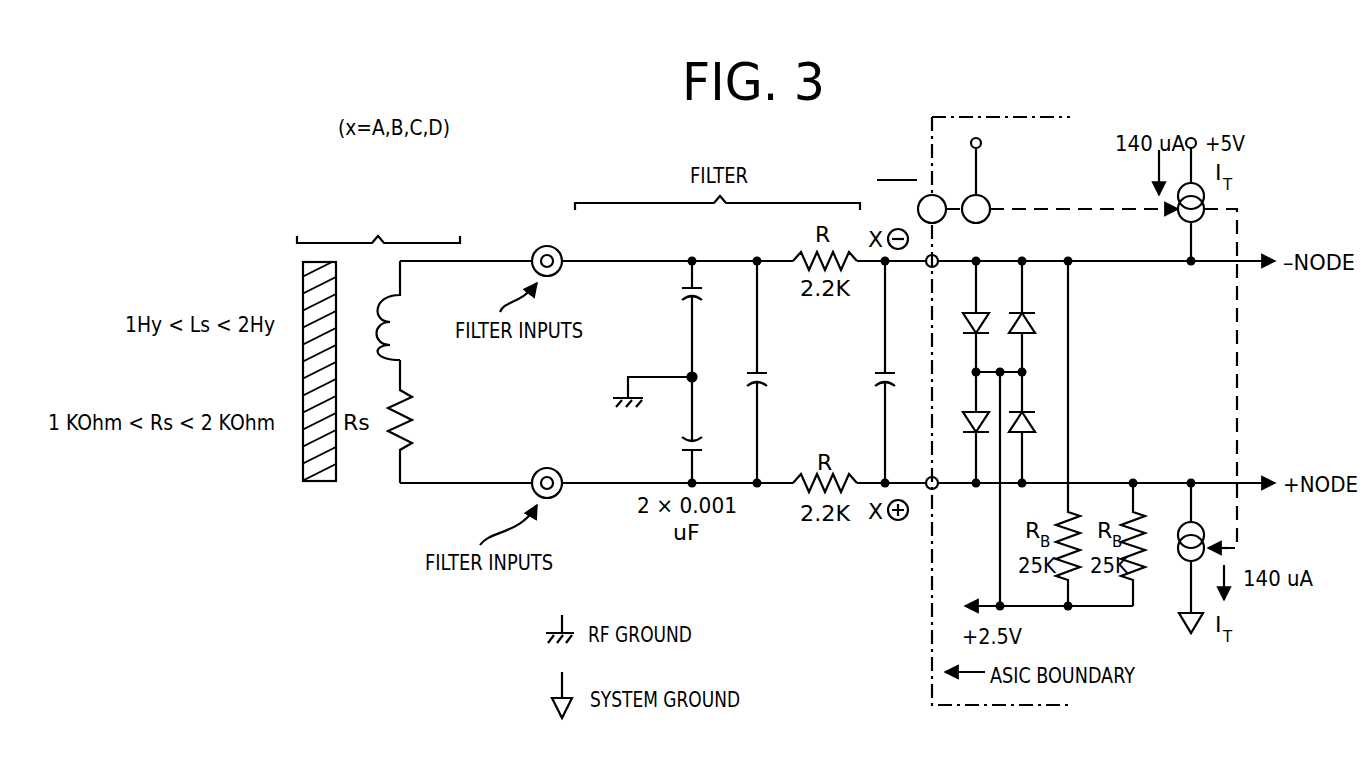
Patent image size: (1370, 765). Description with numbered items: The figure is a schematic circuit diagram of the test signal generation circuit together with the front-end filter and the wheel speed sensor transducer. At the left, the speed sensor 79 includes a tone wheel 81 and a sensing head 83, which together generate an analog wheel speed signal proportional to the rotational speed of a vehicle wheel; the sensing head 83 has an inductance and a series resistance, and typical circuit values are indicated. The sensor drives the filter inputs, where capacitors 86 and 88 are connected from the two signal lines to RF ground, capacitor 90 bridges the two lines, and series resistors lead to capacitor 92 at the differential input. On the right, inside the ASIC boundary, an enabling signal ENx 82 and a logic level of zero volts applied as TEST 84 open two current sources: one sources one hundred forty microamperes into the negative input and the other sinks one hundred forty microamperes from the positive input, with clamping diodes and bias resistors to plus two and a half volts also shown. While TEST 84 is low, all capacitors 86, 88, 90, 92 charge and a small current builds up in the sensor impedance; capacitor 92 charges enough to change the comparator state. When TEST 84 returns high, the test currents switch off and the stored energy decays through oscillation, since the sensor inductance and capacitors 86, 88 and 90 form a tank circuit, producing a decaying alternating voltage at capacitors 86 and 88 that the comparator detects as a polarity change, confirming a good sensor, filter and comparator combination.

The speed sensor 79 is at (340, 195).
The tone wheel 81 is at (322, 488).
The sensing head 83 is at (405, 322).
The TEST 84 is at (905, 178).
The enabling signal ENx 82 is at (1008, 168).
The capacitor 86 is at (685, 285).
The capacitor 88 is at (685, 448).
The capacitor 90 is at (762, 368).
The capacitor 92 is at (880, 388).